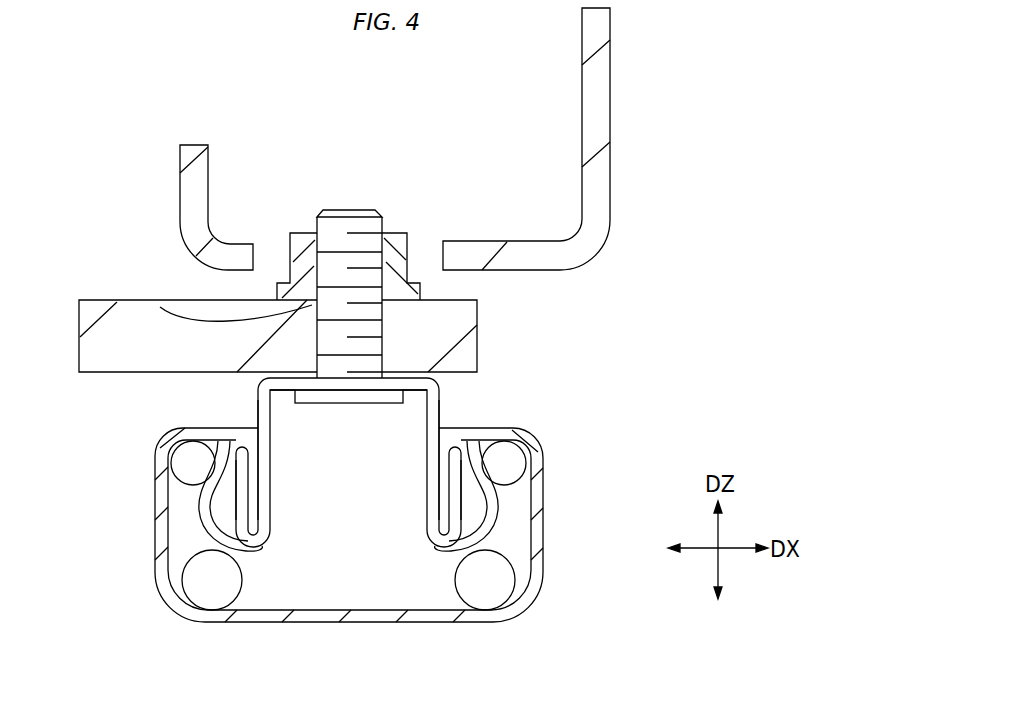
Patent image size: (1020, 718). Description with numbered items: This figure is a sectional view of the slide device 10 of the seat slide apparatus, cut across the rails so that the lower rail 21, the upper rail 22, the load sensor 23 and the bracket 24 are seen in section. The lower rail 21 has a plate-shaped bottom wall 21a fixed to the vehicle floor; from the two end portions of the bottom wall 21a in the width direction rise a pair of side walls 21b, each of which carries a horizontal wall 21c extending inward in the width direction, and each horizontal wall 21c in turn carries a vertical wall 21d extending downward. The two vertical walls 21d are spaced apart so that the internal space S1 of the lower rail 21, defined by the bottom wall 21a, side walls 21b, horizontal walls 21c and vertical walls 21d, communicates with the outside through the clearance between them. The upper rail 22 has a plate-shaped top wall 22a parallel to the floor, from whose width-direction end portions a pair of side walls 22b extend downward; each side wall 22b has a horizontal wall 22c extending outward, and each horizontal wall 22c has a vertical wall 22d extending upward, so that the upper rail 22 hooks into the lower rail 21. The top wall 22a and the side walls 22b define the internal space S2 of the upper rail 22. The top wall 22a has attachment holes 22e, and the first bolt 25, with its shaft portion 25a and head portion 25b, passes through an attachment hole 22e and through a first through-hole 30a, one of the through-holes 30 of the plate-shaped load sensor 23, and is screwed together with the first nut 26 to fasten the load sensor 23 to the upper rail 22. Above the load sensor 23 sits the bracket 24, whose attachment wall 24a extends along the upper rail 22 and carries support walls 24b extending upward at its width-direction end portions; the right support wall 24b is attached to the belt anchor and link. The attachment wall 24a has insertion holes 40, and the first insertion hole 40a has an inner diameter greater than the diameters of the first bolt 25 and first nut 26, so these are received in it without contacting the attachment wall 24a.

The mounting structure 10 is at (608, 305).
The lower rail 21 is at (157, 473).
The bottom wall 21a is at (466, 618).
The side wall 21b is at (157, 533).
The horizontal wall 21c is at (208, 428).
The vertical wall 21d is at (271, 521).
The upper rail 22 is at (441, 406).
The top wall 22a is at (410, 395).
The side wall 22b is at (271, 430).
The horizontal wall 22c is at (243, 580).
The vertical wall 22d is at (240, 445).
The attachment hole 22e is at (384, 345).
The load sensor 23 is at (98, 300).
The bracket 24 is at (610, 28).
The attachment wall 24a is at (530, 241).
The support wall 24b is at (610, 103).
The first bolt 25 is at (383, 214).
The shaft portion 25a is at (360, 210).
The head portion 25b is at (354, 404).
The first nut 26 is at (408, 240).
The through-hole 30 is at (160, 307).
The first through-hole 30a is at (236, 313).
The insertion hole 40 is at (270, 241).
The first insertion hole 40a is at (196, 201).
The internal space S1 is at (360, 563).
The internal space S2 is at (360, 496).